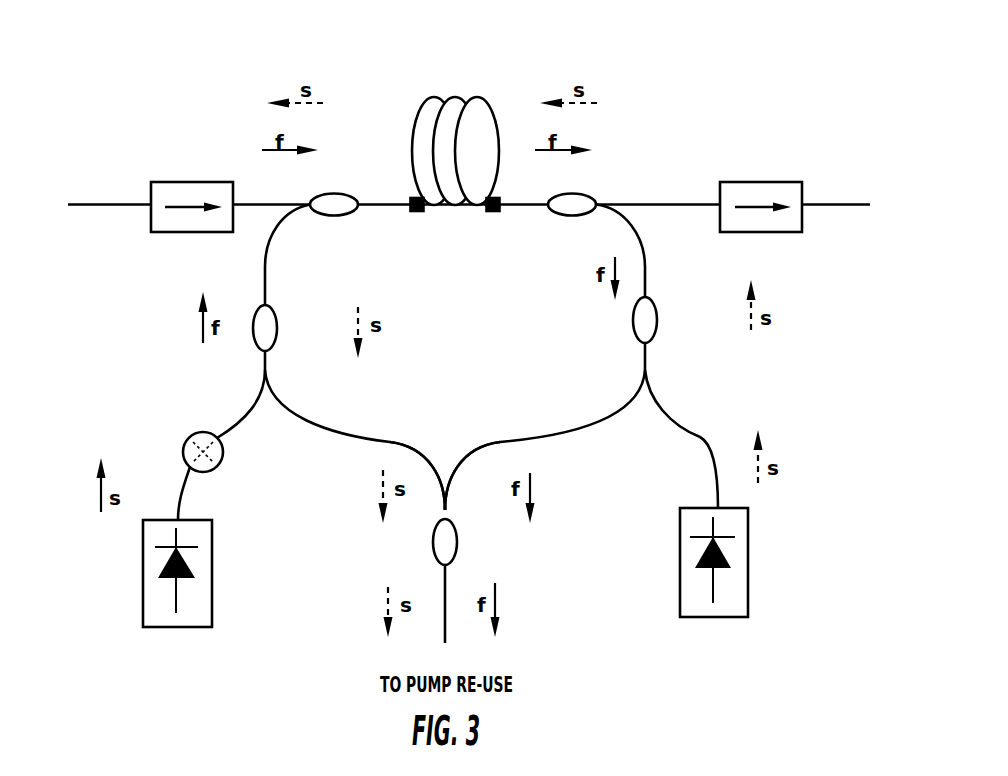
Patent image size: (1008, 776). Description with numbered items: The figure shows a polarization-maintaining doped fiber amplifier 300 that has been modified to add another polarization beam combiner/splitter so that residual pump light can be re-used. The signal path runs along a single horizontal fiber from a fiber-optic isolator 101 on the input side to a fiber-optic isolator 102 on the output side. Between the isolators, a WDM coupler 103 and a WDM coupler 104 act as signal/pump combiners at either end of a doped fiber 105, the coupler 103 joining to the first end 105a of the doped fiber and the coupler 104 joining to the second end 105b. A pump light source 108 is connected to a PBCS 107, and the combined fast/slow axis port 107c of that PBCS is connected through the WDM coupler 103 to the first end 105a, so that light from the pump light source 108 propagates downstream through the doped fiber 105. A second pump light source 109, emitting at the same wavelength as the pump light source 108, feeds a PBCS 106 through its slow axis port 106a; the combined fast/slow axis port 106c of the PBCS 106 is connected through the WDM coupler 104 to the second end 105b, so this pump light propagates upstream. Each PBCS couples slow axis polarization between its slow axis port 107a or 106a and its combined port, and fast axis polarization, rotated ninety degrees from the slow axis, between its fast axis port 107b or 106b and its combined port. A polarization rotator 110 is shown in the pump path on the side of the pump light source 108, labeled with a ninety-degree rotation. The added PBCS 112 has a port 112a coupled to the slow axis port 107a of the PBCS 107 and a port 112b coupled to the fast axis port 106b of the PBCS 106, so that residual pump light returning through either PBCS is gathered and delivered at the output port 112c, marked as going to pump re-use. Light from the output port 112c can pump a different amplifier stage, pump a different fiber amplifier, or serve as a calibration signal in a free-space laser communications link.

The fiber amplifier 300 is at (741, 92).
The fiber-optic isolator 101 is at (183, 232).
The fiber-optic isolator 102 is at (752, 232).
The WDM coupler 103 is at (338, 216).
The WDM coupler 104 is at (575, 216).
The doped fiber 105 is at (455, 211).
The first end of the doped fiber 105a is at (414, 197).
The second end of the doped fiber 105b is at (497, 197).
The polarization beam combiner/splitter 106 is at (657, 318).
The slow axis port of the PBCS 106 106a is at (702, 437).
The fast axis port of the PBCS 106 106b is at (560, 428).
The combined fast/slow axis port of PBCS 106 106c is at (645, 268).
The PBCS 107 is at (253, 327).
The slow axis port of the PBCS 107 107a is at (328, 428).
The fast axis port of the PBCS 107 107b is at (228, 423).
The combined fast/slow axis port of the PBCS 107 107c is at (265, 273).
The pump light source 108 is at (185, 627).
The pump light source 109 is at (722, 617).
The polarization rotator 110 is at (222, 460).
The PBCS 112 is at (457, 548).
The port of PBCS 112 112a is at (428, 468).
The port of PBCS 112 112b is at (470, 457).
The output port of PBCS 112 112c is at (443, 590).